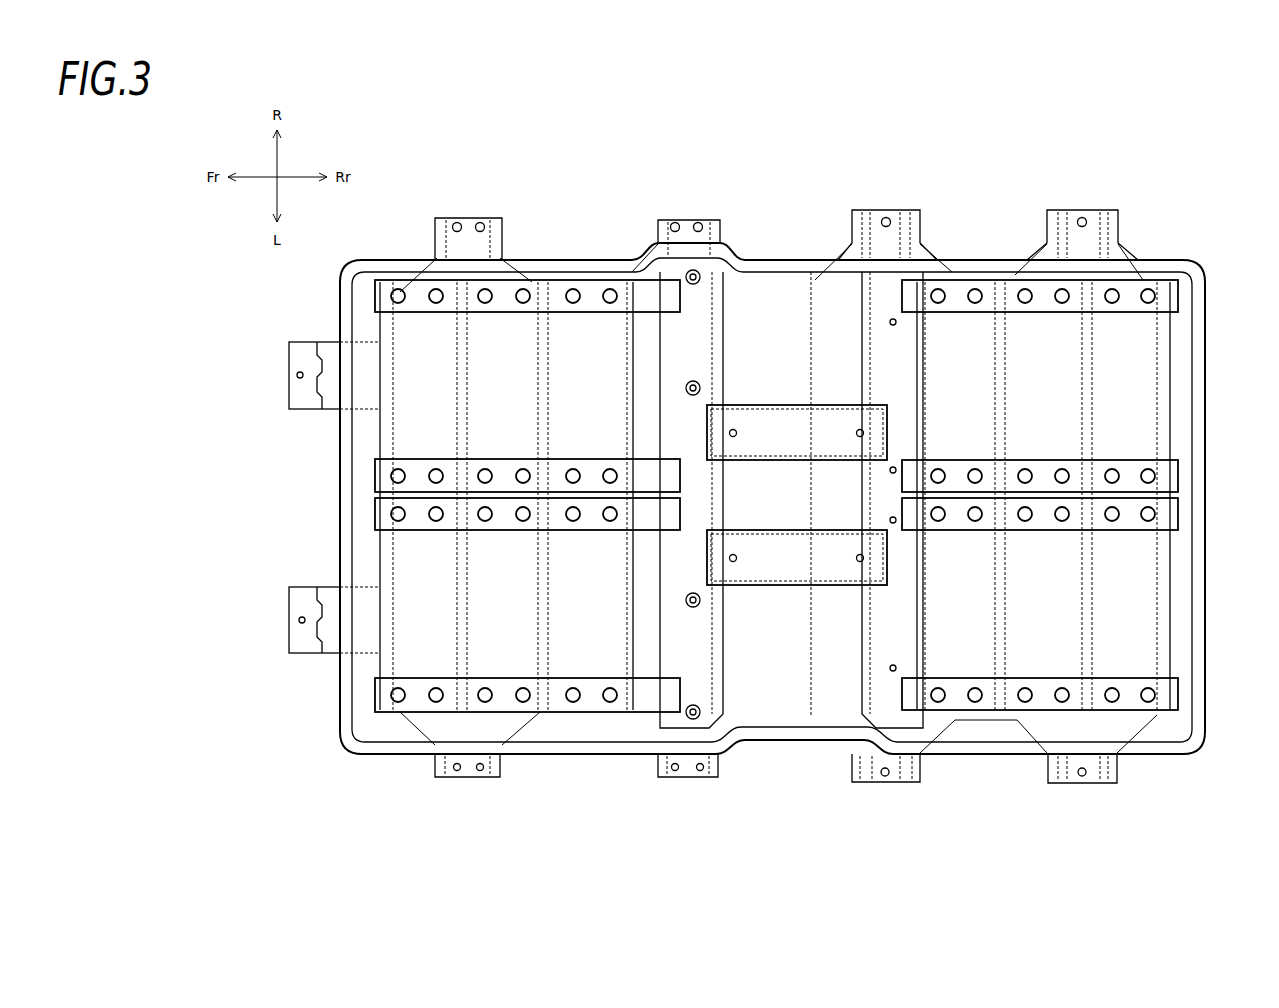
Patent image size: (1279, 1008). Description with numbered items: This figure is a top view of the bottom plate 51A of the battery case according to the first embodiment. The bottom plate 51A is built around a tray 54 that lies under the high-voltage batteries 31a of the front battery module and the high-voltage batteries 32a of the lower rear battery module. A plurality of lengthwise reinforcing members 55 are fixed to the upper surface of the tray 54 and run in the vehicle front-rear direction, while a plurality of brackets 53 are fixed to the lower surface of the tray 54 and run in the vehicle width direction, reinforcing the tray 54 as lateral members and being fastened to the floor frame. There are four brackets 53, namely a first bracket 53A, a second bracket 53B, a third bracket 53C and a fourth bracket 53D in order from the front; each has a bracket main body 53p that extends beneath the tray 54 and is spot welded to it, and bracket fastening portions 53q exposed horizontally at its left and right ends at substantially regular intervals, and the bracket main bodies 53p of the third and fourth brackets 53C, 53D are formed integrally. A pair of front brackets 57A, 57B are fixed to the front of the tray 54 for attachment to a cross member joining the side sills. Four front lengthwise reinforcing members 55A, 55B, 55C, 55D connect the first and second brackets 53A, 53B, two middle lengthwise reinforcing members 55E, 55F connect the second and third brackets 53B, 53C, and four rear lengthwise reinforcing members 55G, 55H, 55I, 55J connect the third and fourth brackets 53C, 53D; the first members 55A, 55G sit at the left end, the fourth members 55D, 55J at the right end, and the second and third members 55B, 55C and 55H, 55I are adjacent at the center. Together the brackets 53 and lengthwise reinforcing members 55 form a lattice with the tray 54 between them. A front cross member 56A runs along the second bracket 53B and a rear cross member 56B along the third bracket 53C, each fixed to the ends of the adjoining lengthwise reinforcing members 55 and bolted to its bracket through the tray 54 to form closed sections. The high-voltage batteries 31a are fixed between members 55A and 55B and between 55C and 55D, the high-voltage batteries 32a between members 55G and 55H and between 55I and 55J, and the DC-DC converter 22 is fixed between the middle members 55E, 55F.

The bottom plate 51A is at (1173, 197).
The high-voltage batteries 31a is at (378, 433).
The high-voltage batteries 32a is at (1170, 383).
The brackets 53 is at (922, 770).
The first bracket 53A is at (465, 216).
The second bracket 53B is at (690, 219).
The third bracket 53C is at (884, 209).
The fourth bracket 53D is at (1082, 209).
The bracket main body 53p is at (652, 355).
The bracket fastening portions 53q is at (468, 780).
The tray 54 is at (783, 313).
The lengthwise reinforcing members 55 is at (903, 692).
The first front lengthwise reinforcing member 55A is at (377, 694).
The second front lengthwise reinforcing member 55B is at (377, 514).
The third front lengthwise reinforcing member 55C is at (377, 476).
The fourth front lengthwise reinforcing member 55D is at (377, 294).
The first middle lengthwise reinforcing member 55E is at (887, 575).
The second middle lengthwise reinforcing member 55F is at (887, 415).
The first rear lengthwise reinforcing member 55G is at (1178, 692).
The second rear lengthwise reinforcing member 55H is at (1178, 515).
The third rear lengthwise reinforcing member 55I is at (1178, 476).
The fourth rear lengthwise reinforcing member 55J is at (1178, 292).
The front cross member 56A is at (686, 614).
The rear cross member 56B is at (908, 432).
The front bracket 57A is at (292, 637).
The front bracket 57B is at (292, 393).
The DC-DC converter 22 is at (760, 587).